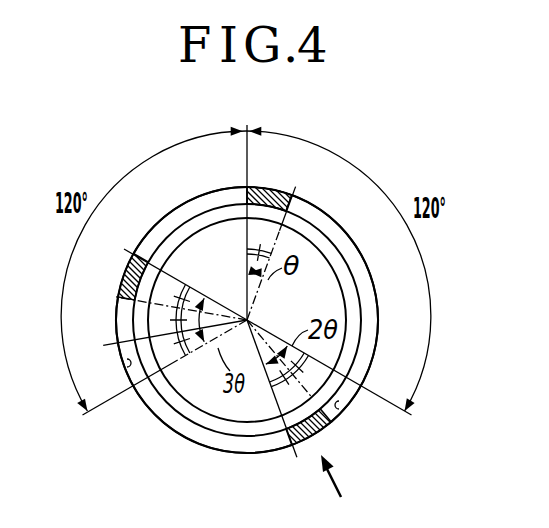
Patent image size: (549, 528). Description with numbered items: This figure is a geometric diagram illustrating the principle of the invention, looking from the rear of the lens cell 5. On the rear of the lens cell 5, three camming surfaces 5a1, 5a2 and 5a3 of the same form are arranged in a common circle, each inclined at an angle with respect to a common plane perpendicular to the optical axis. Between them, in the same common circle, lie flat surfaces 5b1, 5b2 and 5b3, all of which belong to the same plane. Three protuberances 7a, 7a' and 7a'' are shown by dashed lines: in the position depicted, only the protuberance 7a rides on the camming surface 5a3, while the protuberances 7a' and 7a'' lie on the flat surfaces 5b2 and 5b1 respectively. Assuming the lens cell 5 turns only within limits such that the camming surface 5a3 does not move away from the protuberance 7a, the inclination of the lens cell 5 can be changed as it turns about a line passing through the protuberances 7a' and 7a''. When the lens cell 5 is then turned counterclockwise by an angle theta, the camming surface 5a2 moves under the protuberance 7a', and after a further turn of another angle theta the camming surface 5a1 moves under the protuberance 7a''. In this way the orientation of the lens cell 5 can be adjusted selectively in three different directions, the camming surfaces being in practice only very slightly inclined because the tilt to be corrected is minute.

The lens cell 5 is at (247, 457).
The camming surface 5a1 is at (127, 270).
The camming surface 5a2 is at (323, 430).
The camming surface 5a3 is at (258, 190).
The flat surface 5b1 is at (176, 428).
The flat surface 5b2 is at (372, 341).
The flat surface 5b3 is at (202, 200).
The protuberance 7a is at (233, 288).
The protuberance 7a' is at (329, 378).
The protuberance 7a'' is at (165, 367).